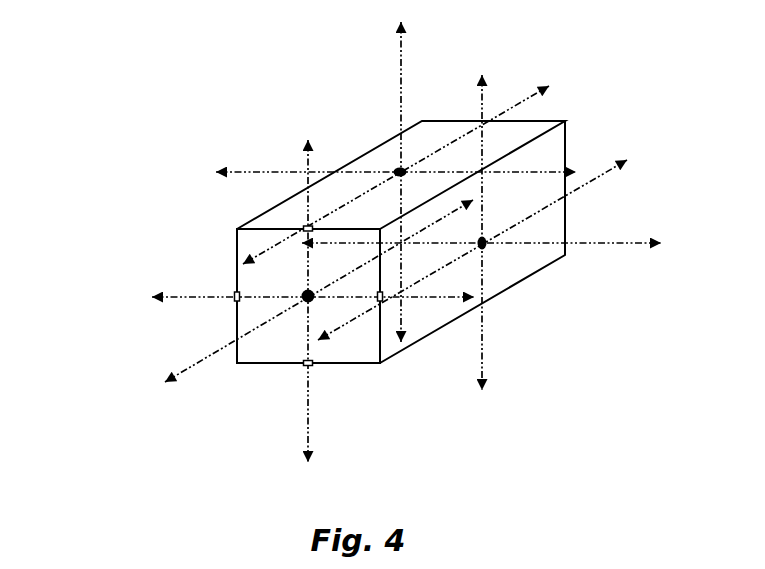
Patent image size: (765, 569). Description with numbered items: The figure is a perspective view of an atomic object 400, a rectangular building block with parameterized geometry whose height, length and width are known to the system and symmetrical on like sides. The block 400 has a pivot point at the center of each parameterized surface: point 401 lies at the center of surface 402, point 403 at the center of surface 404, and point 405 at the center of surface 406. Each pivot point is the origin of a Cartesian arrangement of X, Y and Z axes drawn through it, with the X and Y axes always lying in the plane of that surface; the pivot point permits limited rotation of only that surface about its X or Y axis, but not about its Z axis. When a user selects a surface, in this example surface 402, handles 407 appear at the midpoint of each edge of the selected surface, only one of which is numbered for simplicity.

The atomic object 400 is at (128, 102).
The pivot point 401 is at (306, 298).
The surface 402 is at (358, 343).
The pivot point 403 is at (400, 168).
The surface 404 is at (271, 213).
The pivot point 405 is at (487, 244).
The surface 406 is at (541, 248).
The handles 407 is at (237, 290).